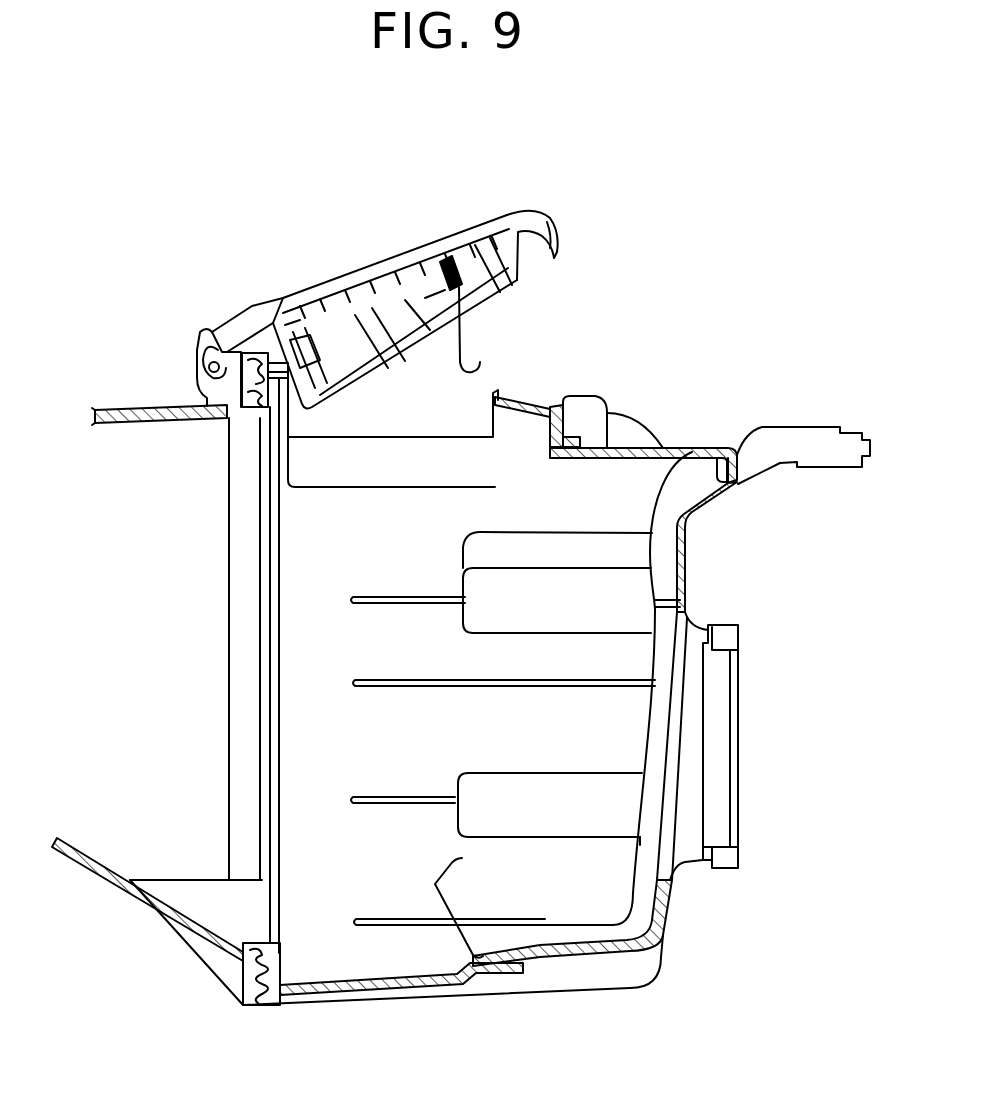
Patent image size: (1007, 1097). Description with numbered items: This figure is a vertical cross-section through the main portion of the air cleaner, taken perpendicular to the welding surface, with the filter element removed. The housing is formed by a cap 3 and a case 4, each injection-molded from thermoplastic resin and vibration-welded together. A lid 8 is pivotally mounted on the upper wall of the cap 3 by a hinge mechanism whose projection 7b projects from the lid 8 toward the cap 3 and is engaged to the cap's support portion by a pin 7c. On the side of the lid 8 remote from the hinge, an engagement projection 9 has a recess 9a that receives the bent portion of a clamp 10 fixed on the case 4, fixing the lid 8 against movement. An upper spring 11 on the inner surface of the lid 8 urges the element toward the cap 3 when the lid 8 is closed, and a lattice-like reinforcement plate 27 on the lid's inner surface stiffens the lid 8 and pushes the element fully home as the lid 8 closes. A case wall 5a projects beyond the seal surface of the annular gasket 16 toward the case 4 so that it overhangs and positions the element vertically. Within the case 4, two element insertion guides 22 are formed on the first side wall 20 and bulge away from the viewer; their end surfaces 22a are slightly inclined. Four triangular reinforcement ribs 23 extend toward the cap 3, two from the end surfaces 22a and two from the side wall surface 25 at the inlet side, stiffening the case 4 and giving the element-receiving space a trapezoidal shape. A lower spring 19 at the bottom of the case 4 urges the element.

The cap 3 is at (130, 876).
The case 4 is at (670, 890).
The case wall 5a is at (305, 340).
The projection 7b is at (203, 363).
The pin 7c is at (212, 352).
The lid 8 is at (445, 282).
The engagement projection 9 is at (557, 211).
The recess 9a is at (547, 220).
The clamp 10 is at (575, 410).
The upper spring 11 is at (465, 342).
The gasket 16 is at (280, 967).
The lower spring 19 is at (445, 900).
The first side wall 20 is at (377, 960).
The element insertion guide 22 is at (617, 603).
The end surface of element insertion guide 22a is at (652, 533).
The reinforcement rib 23 is at (383, 597).
The side wall surface 25 is at (715, 447).
The reinforcement plate 27 is at (407, 313).